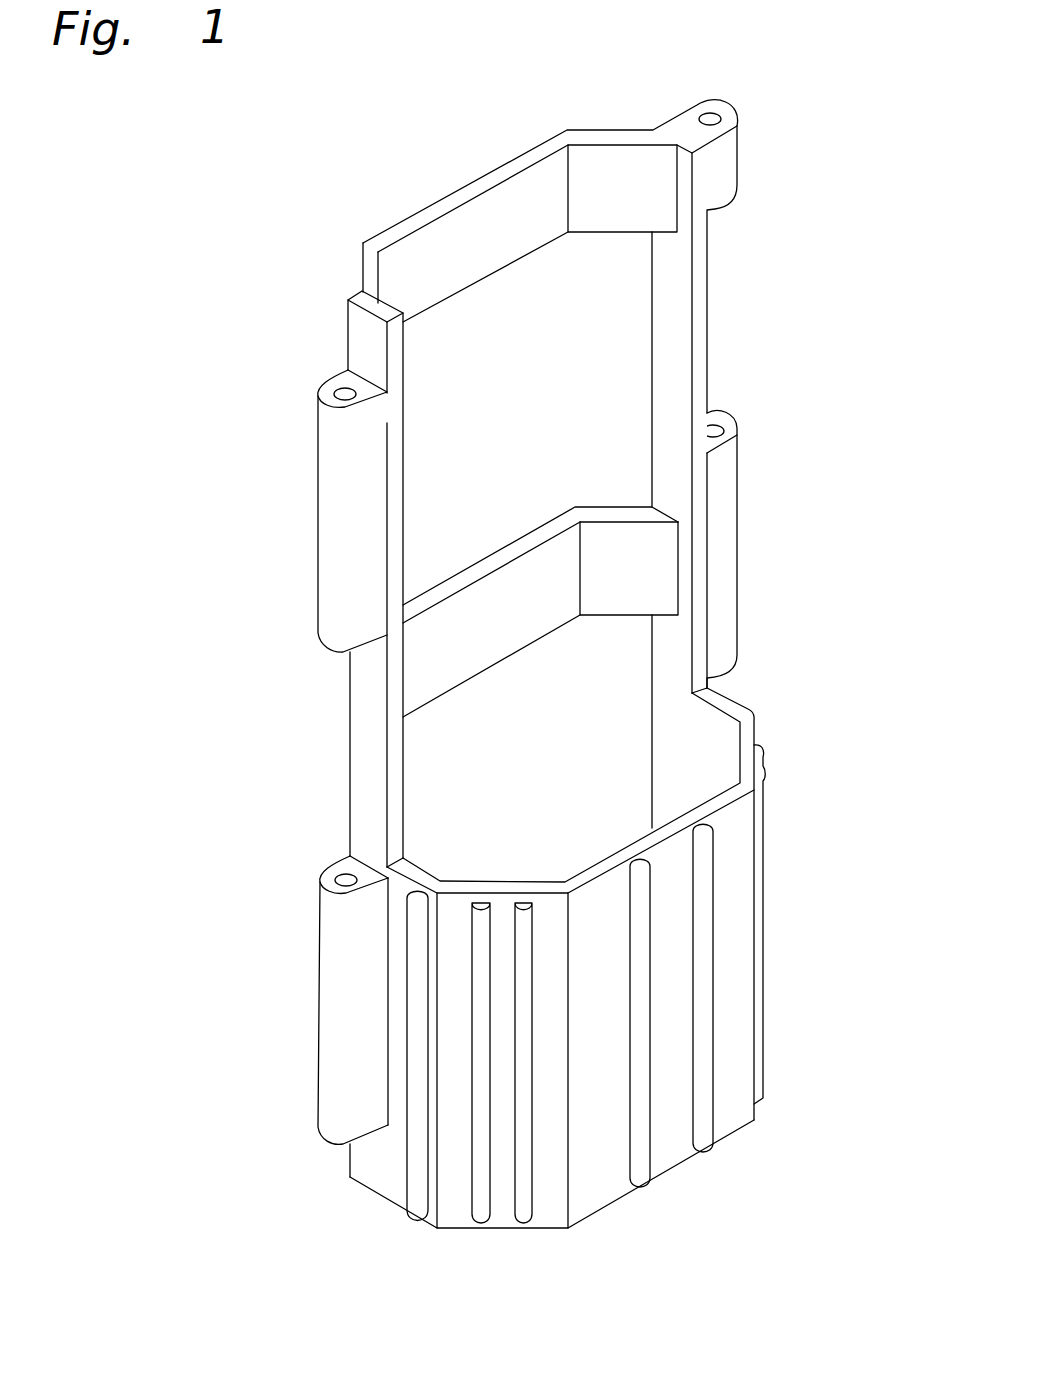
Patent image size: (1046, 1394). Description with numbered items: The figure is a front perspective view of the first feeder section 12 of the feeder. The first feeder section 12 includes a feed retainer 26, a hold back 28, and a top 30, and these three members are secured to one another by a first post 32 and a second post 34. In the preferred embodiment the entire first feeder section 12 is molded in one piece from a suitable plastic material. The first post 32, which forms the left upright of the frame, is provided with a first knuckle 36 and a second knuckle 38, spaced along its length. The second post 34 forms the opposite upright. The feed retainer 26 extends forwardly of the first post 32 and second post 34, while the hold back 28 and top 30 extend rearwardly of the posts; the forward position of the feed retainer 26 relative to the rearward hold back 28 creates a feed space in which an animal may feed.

The first feeder section 12 is at (167, 1006).
The feed retainer 26 is at (730, 1010).
The hold back 28 is at (622, 548).
The top 30 is at (552, 175).
The first post 32 is at (350, 773).
The second post 34 is at (718, 608).
The first knuckle 36 is at (318, 487).
The second knuckle 38 is at (318, 1008).